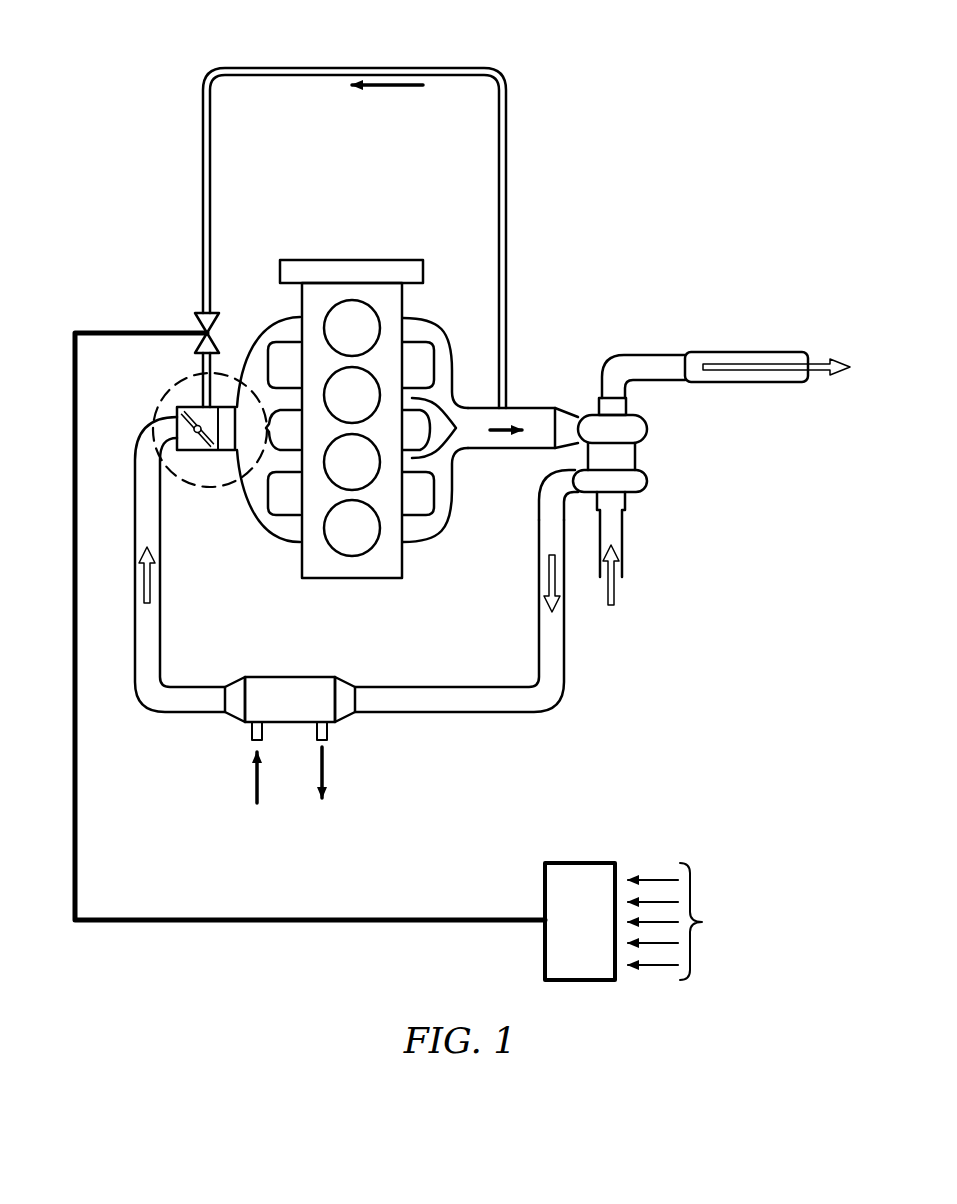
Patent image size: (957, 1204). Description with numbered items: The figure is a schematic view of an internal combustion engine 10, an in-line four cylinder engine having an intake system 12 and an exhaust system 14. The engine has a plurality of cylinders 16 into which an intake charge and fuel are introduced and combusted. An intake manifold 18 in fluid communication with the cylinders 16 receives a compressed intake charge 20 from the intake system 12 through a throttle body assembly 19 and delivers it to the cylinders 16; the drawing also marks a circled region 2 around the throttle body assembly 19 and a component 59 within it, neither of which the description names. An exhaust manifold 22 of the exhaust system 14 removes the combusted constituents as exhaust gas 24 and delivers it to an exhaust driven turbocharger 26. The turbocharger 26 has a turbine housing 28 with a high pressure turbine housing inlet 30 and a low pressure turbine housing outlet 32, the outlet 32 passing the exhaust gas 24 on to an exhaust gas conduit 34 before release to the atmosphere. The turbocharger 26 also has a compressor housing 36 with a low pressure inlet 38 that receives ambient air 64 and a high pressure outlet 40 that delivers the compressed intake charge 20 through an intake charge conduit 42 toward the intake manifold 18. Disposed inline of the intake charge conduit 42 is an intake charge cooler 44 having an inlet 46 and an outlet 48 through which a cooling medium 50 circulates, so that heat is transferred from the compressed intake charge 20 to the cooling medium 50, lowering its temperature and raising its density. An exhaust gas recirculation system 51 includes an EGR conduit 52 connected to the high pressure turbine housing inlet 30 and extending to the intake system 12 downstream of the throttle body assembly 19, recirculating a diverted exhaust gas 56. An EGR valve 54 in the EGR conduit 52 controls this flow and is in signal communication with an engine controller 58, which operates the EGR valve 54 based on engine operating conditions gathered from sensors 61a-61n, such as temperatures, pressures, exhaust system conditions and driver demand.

The throttle body region 2 is at (175, 403).
The internal combustion engine 10 is at (376, 391).
The intake system 12 is at (137, 433).
The exhaust system 14 is at (670, 435).
The cylinders 16 is at (372, 328).
The intake manifold 18 is at (277, 527).
The throttle body assembly 19 is at (211, 409).
The compressed intake charge 20 is at (150, 578).
The exhaust manifold 22 is at (435, 522).
The exhaust gas 24 is at (492, 432).
The exhaust driven turbocharger 26 is at (628, 452).
The turbine housing 28 is at (645, 428).
The high pressure turbine housing inlet 30 is at (583, 412).
The low pressure turbine housing outlet 32 is at (602, 398).
The exhaust gas conduit 34 is at (782, 383).
The compressor housing 36 is at (640, 482).
The low pressure inlet 38 is at (618, 500).
The high pressure outlet 40 is at (543, 510).
The intake charge conduit 42 is at (158, 695).
The intake charge cooler 44 is at (287, 715).
The inlet 46 is at (248, 730).
The outlet 48 is at (327, 730).
The cooling medium 50 is at (253, 775).
The exhaust gas recirculation system 51 is at (319, 206).
The EGR conduit 52 is at (462, 67).
The EGR valve 54 is at (196, 322).
The diverted exhaust gas 56 is at (381, 88).
The engine controller 58 is at (345, 656).
The throttle plate sensor 59 is at (227, 417).
The sensors 61a-61n is at (704, 922).
The ambient air 64 is at (613, 590).